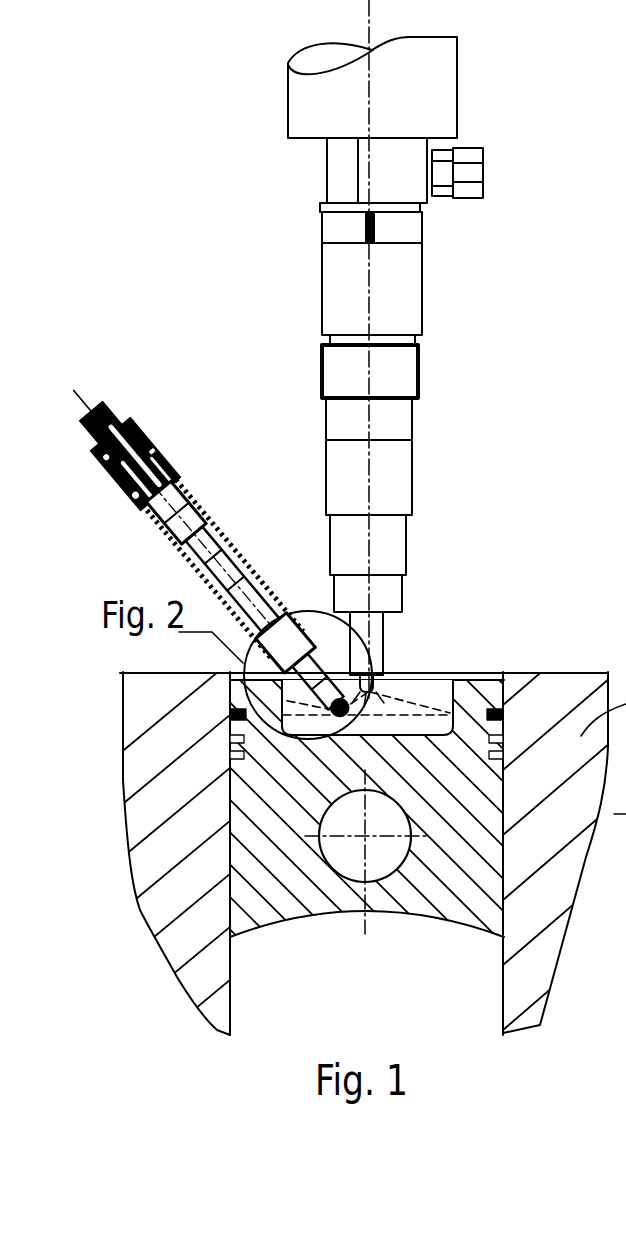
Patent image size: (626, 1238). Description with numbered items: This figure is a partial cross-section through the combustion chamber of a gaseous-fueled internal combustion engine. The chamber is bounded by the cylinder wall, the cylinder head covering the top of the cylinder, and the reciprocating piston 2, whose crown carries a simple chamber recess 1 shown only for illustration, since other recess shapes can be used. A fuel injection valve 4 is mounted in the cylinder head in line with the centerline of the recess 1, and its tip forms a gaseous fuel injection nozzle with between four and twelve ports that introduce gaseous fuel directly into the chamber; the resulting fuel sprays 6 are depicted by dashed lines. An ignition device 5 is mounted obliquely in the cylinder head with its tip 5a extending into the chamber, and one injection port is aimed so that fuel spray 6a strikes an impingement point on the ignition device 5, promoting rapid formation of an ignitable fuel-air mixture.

The combustion chamber bowl 1 is at (456, 697).
The piston 2 is at (470, 890).
The first fuel injector 4 is at (426, 418).
The second fuel injector 5 is at (209, 465).
The nozzle of second injector 5a is at (300, 681).
The fuel spray jets 6 is at (395, 700).
The nozzle tip of first injector 6a is at (339, 688).